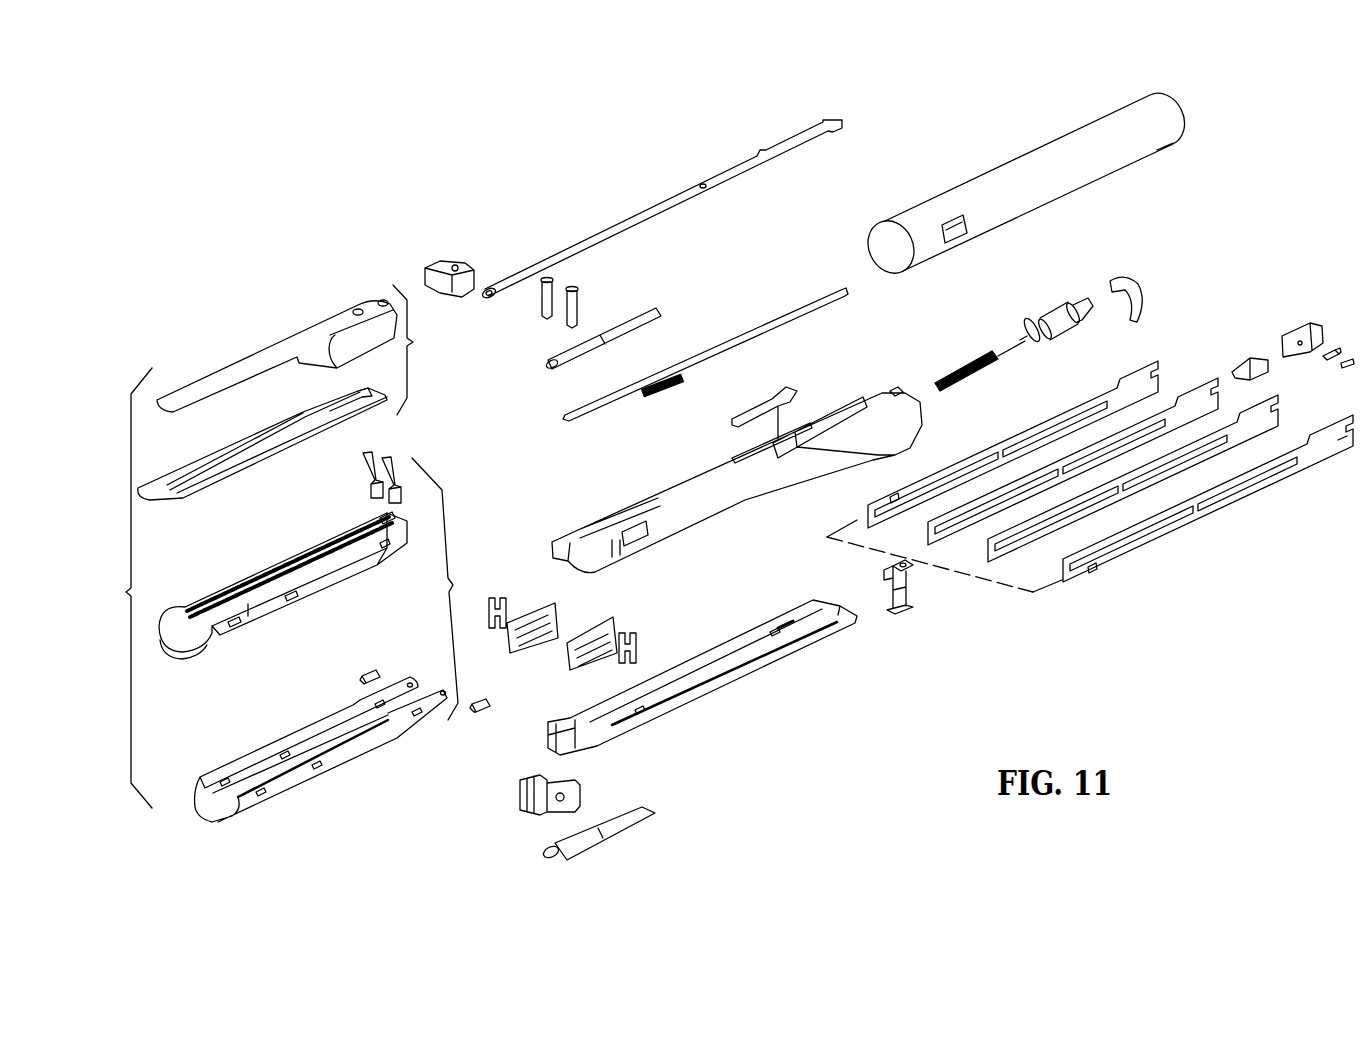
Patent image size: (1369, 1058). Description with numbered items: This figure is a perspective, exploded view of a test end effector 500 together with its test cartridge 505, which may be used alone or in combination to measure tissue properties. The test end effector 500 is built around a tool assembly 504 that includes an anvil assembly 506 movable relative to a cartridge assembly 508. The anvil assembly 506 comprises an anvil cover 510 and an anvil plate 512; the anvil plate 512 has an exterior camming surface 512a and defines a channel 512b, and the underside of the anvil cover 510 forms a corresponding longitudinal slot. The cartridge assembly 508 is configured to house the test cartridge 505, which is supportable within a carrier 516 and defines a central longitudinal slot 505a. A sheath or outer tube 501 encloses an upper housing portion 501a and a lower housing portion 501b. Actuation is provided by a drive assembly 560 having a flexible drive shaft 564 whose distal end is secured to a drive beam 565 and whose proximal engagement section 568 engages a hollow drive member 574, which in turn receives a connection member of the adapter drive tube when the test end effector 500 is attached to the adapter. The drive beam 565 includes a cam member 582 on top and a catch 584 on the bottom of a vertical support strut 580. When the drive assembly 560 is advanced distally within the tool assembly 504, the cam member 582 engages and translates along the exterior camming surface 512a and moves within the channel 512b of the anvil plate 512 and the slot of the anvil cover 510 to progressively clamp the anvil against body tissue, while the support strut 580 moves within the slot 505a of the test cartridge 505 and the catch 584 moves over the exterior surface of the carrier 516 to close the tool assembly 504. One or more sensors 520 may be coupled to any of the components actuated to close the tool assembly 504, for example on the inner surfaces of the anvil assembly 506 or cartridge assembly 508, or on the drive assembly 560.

The test end effector 500 is at (346, 187).
The outer tube 501 is at (996, 176).
The upper housing portion 501a is at (688, 483).
The lower housing portion 501b is at (710, 683).
The tool assembly 504 is at (125, 588).
The test cartridge 505 is at (280, 586).
The central longitudinal slot 505a is at (277, 558).
The anvil assembly 506 is at (433, 338).
The cartridge assembly 508 is at (449, 589).
The anvil cover 510 is at (222, 365).
The anvil plate 512 is at (237, 470).
The exterior camming surface 512a is at (319, 411).
The channel 512b is at (346, 414).
The carrier 516 is at (328, 767).
The sensors 520 is at (383, 520).
The drive assembly 560 is at (1071, 597).
The flexible drive shaft 564 is at (1191, 536).
The drive beam 565 is at (910, 592).
The proximal engagement section 568 is at (1342, 455).
The hollow drive member 574 is at (1322, 328).
The vertical support strut 580 is at (893, 596).
The cam member 582 is at (890, 565).
The catch 584 is at (898, 612).